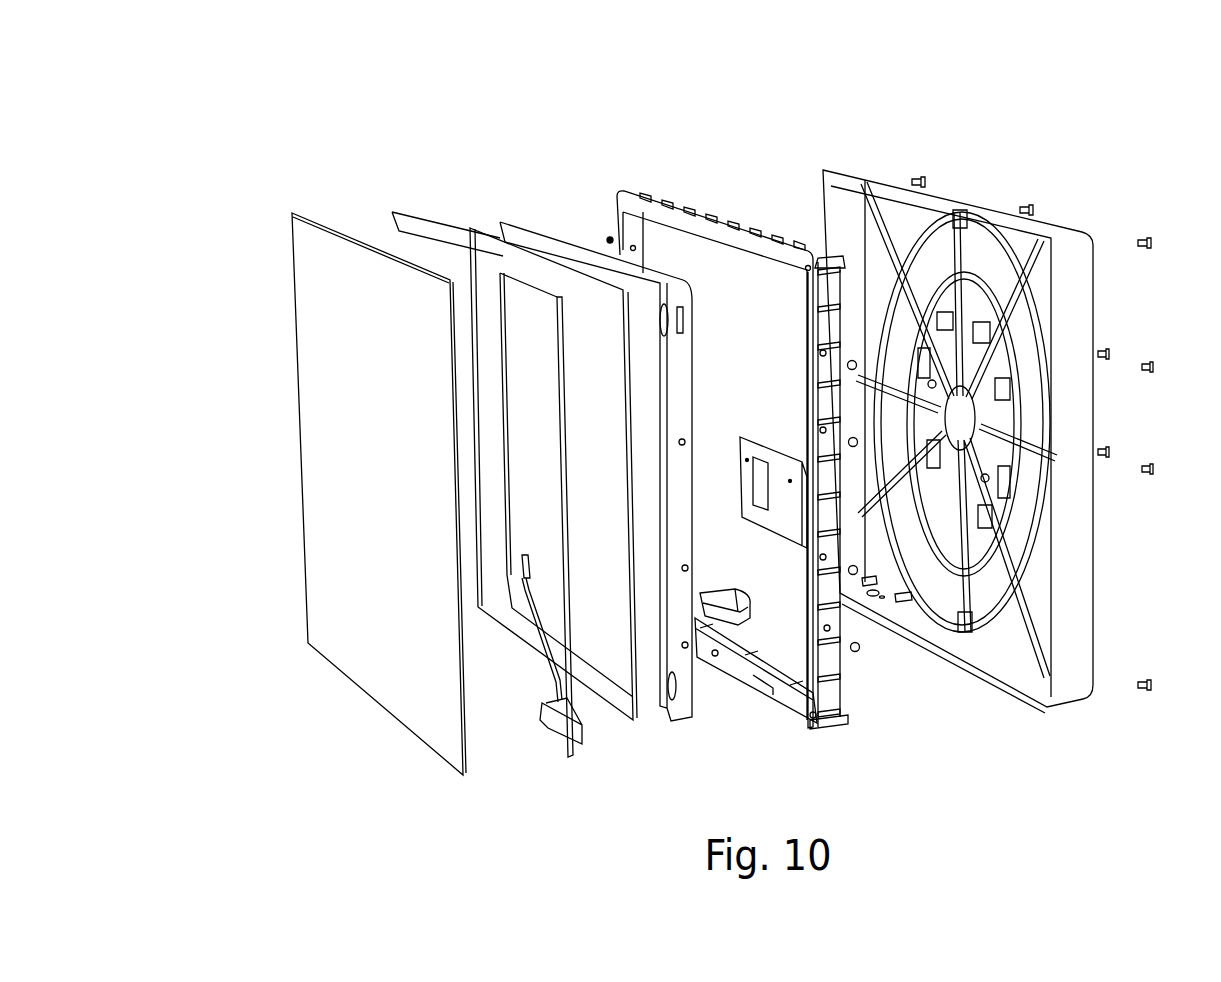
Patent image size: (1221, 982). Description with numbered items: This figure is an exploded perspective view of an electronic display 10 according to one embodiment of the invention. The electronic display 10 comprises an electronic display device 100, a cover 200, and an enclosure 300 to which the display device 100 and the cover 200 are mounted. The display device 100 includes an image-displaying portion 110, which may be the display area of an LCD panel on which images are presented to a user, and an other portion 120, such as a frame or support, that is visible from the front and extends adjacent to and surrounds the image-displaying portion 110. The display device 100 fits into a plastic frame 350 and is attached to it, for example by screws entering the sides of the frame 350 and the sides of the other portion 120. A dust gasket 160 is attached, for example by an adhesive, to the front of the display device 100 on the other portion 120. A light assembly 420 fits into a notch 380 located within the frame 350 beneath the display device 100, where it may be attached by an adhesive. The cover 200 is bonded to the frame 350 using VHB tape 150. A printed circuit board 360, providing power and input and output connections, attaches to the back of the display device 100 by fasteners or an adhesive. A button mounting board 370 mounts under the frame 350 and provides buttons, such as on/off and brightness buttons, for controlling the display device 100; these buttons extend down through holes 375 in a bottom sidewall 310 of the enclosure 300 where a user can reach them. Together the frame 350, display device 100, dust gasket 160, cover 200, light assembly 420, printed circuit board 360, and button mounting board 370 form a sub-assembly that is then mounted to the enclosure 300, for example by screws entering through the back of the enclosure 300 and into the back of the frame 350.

The electronic display 10 is at (706, 432).
The electronic display device 100 is at (581, 458).
The image-displaying portion 110 is at (653, 642).
The other portion 120 is at (682, 708).
The VHB tape 150 is at (428, 232).
The dust gasket 160 is at (607, 700).
The cover 200 is at (373, 515).
The enclosure 300 is at (1007, 463).
The bottom sidewall 310 is at (1005, 667).
The plastic frame 350 is at (687, 223).
The printed circuit board 360 is at (778, 497).
The button mounting board 370 is at (728, 623).
The holes 375 is at (873, 597).
The notch 380 is at (788, 703).
The light assembly 420 is at (563, 722).